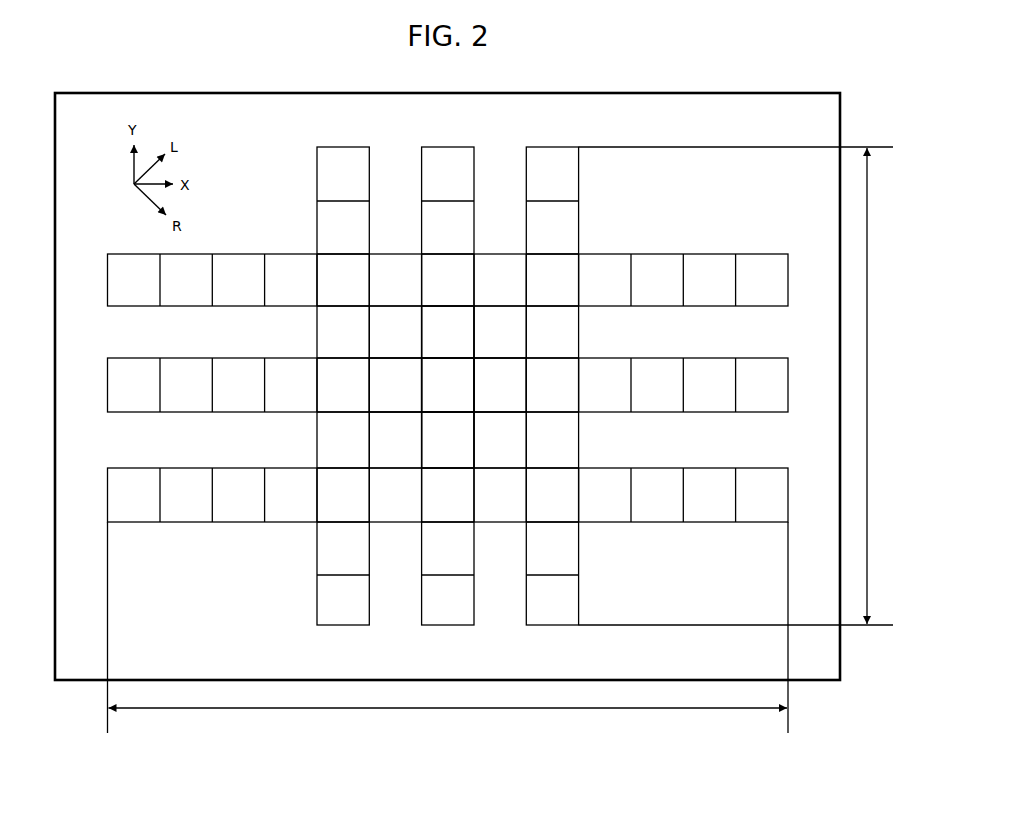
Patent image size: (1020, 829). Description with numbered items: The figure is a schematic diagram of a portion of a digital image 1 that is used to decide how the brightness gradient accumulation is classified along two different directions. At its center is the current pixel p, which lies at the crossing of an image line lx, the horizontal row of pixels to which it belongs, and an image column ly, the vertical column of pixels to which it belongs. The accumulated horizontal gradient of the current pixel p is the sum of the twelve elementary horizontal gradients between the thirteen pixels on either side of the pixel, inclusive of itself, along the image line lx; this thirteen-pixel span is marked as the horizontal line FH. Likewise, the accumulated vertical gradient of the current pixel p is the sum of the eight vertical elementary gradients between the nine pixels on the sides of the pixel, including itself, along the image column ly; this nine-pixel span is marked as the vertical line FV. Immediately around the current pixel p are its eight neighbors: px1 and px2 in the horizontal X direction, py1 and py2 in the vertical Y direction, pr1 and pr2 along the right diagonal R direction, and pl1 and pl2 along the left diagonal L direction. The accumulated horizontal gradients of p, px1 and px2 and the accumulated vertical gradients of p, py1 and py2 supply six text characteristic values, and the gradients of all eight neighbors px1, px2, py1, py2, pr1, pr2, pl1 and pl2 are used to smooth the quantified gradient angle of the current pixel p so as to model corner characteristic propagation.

The image 1 is at (841, 118).
The image line lx is at (793, 384).
The image column ly is at (446, 167).
The current pixel p is at (448, 385).
The immediate neighbor pixel in the X direction px1 is at (500, 385).
The immediate neighbor pixel in the X direction px2 is at (395, 385).
The immediate neighbor pixel in the Y direction py1 is at (448, 332).
The immediate neighbor pixel in the Y direction py2 is at (448, 440).
The neighboring pixel in the L direction pl1 is at (500, 332).
The neighboring pixel in the L direction pl2 is at (395, 440).
The neighboring pixel in the R direction pr1 is at (500, 440).
The neighboring pixel in the R direction pr2 is at (395, 332).
The vertical line FV is at (740, 386).
The horizontal line FH is at (448, 627).